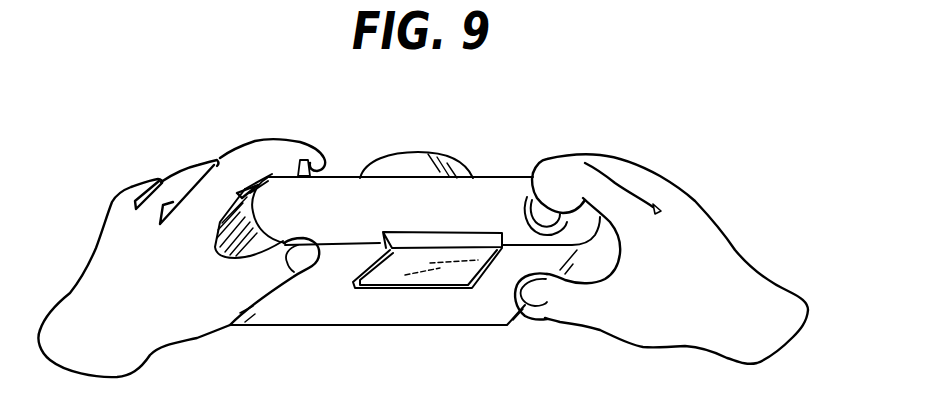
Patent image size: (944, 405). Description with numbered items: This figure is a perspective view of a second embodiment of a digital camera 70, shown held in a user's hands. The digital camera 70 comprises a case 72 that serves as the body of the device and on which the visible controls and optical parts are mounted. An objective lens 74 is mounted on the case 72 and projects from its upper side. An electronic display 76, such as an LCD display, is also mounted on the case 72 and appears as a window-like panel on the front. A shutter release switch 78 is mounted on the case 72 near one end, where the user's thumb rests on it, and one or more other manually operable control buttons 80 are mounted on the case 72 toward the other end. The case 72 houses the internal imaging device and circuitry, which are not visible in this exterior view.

The digital camera 70 is at (635, 148).
The case 72 is at (314, 327).
The objective lens 74 is at (420, 160).
The electronic display 76 is at (443, 275).
The shutter release switch 78 is at (518, 213).
The manually operable control buttons 80 is at (303, 160).